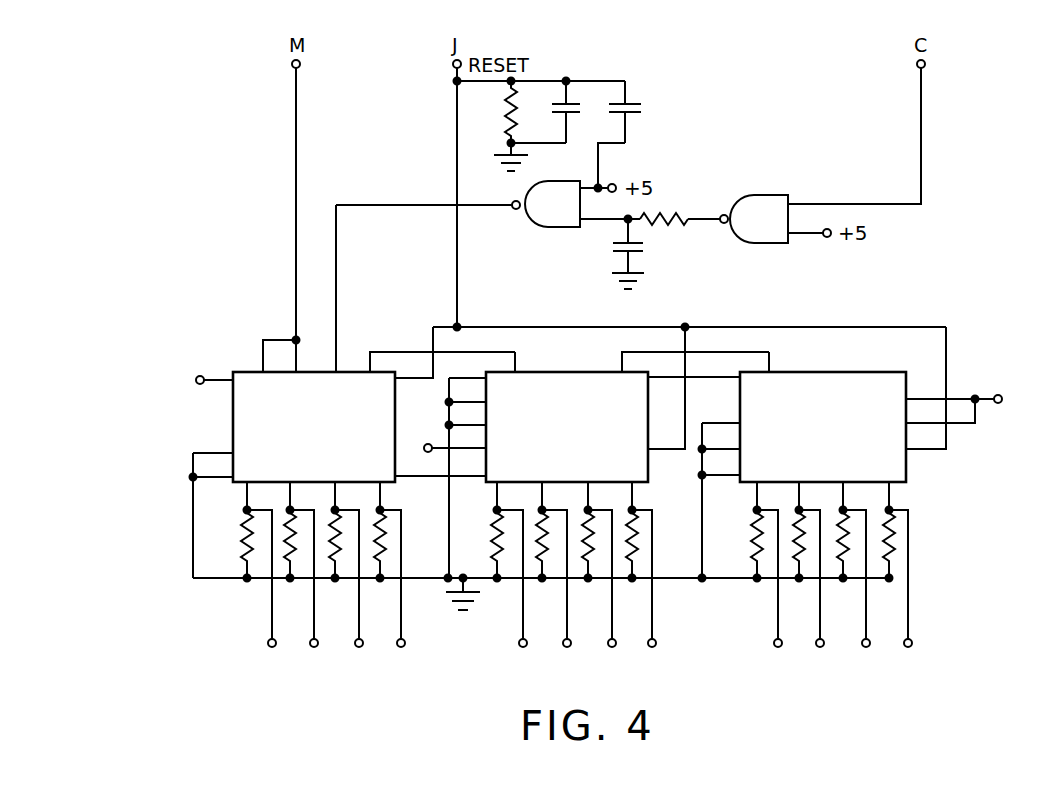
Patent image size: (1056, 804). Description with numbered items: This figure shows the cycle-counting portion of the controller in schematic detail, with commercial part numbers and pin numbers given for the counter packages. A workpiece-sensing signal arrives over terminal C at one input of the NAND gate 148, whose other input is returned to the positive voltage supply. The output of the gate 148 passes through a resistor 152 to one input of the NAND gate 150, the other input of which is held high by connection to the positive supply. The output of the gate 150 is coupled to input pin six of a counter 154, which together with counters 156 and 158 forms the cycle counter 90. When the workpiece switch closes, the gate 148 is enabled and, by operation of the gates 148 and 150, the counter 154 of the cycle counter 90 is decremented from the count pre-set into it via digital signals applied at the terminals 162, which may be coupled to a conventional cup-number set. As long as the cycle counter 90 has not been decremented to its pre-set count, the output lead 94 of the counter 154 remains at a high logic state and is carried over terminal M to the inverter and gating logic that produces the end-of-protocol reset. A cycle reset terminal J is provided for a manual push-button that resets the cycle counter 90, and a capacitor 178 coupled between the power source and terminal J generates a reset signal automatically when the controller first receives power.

The cycle counter 90 is at (206, 411).
The output lead 94 is at (296, 140).
The NAND gate 148 is at (780, 227).
The NAND gate 150 is at (572, 208).
The resistor 152 is at (666, 222).
The counter 154 is at (332, 408).
The counter 156 is at (585, 408).
The counter 158 is at (841, 408).
The terminals 162 is at (418, 658).
The capacitor 178 is at (629, 114).